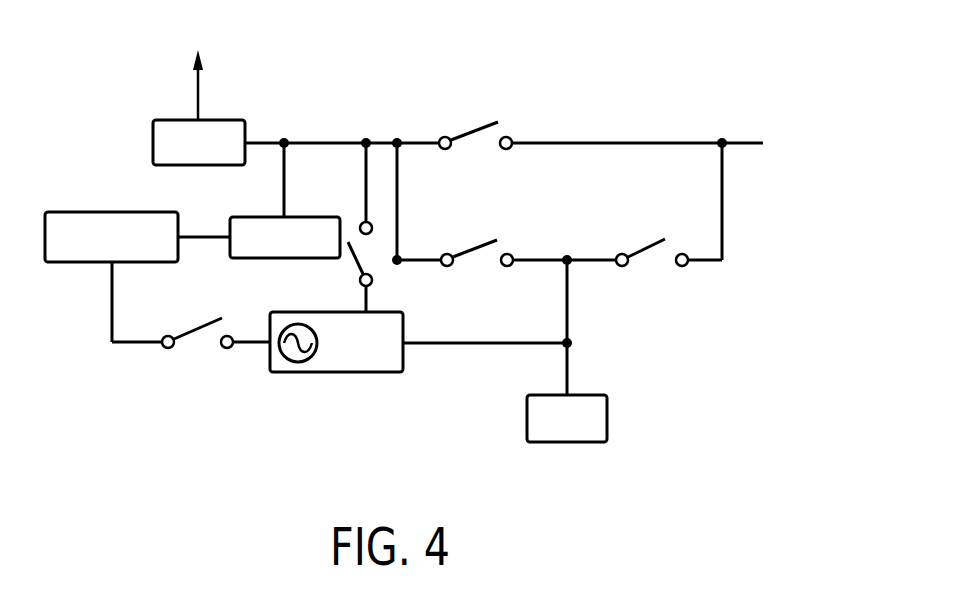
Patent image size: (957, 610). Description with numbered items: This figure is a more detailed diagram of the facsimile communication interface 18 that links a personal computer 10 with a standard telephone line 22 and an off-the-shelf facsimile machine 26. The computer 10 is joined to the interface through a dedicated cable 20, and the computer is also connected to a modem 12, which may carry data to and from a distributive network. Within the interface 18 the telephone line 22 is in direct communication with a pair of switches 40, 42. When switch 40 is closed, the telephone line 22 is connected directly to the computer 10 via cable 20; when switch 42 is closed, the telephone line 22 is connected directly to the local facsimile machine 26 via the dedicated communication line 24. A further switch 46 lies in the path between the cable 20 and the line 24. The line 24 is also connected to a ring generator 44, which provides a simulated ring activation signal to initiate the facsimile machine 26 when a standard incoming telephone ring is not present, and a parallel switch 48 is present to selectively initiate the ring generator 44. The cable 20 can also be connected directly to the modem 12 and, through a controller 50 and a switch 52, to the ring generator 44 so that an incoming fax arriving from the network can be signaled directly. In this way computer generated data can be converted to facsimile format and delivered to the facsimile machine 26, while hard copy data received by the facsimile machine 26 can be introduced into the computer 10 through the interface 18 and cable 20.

The personal computer 10 is at (228, 119).
The modem 12 is at (309, 217).
The facsimile communication interface 18 is at (590, 116).
The dedicated cable 20 is at (267, 142).
The telephone line 22 is at (745, 143).
The dedicated communication line 24 is at (567, 328).
The facsimile machine 26 is at (607, 418).
The switch 40 is at (477, 129).
The switch 42 is at (650, 250).
The ring generator 44 is at (407, 328).
The switch 46 is at (476, 244).
The parallel switch 48 is at (351, 258).
The controller 50 is at (145, 212).
The switch 52 is at (200, 333).